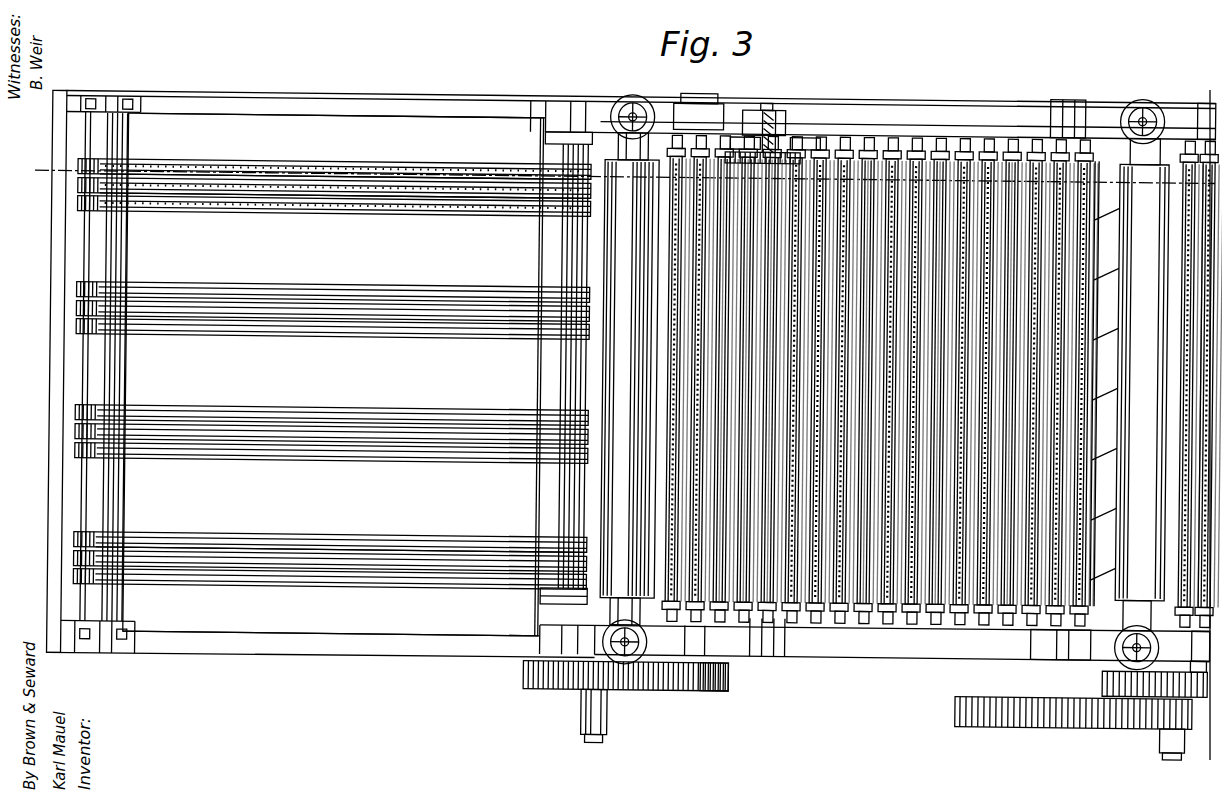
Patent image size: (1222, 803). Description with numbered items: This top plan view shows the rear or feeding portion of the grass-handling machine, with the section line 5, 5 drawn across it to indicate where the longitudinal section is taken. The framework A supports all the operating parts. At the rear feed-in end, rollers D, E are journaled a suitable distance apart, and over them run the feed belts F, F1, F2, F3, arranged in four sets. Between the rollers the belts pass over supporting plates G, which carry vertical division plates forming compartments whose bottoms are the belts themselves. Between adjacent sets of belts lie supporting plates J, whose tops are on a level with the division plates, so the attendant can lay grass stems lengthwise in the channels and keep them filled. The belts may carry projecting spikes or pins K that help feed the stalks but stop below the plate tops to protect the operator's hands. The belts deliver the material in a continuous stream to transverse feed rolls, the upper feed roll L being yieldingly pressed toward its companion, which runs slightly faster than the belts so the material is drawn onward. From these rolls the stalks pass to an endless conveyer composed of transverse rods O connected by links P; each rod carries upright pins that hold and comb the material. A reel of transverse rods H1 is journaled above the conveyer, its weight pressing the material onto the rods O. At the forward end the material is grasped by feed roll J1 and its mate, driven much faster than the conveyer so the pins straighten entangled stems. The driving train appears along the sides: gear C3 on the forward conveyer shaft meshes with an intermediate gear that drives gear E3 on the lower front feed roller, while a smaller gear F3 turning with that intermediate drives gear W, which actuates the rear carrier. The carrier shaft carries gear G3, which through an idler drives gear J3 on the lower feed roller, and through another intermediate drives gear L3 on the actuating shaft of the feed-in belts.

The section line 5 is at (34, 173).
The framework A is at (876, 648).
The roller D is at (126, 252).
The supporting plate J is at (333, 374).
The roller E is at (548, 247).
The spikes or pins K is at (250, 170).
The feed belt F is at (326, 203).
The feed belt F1 is at (344, 321).
The feed belt F2 is at (342, 442).
The feed belt F3 is at (335, 576).
The supporting plate G is at (341, 584).
The feed roll L is at (628, 363).
The transverse rod O is at (962, 152).
The link P is at (868, 142).
The reel rod H1 is at (800, 141).
The feed roll J1 is at (1129, 384).
The gear L3 is at (529, 672).
The gear G3 is at (736, 675).
The gear J3 is at (611, 688).
The gear W is at (964, 697).
The gear E3 is at (1127, 666).
The gear C3 is at (1201, 678).